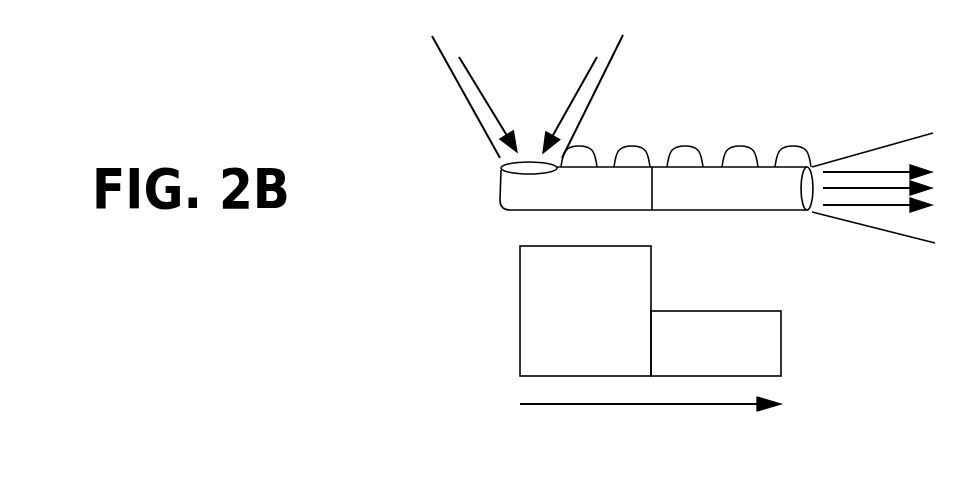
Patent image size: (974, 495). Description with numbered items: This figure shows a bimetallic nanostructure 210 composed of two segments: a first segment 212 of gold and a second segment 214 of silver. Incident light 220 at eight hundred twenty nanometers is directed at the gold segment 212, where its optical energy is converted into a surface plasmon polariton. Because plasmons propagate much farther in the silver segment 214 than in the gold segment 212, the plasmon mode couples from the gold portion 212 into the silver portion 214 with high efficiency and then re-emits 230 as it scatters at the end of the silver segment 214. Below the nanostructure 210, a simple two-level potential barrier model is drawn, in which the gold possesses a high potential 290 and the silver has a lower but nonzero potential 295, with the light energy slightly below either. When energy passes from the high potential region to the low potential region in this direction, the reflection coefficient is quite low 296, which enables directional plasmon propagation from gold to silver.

The bimetallic nanostructure 210 is at (581, 195).
The first segment 212 is at (562, 210).
The second segment 214 is at (674, 210).
The incident light 220 is at (588, 100).
The re-emitted light 230 is at (857, 153).
The high potential 290 is at (520, 351).
The lower potential 295 is at (783, 360).
The low reflection coefficient 296 is at (651, 406).